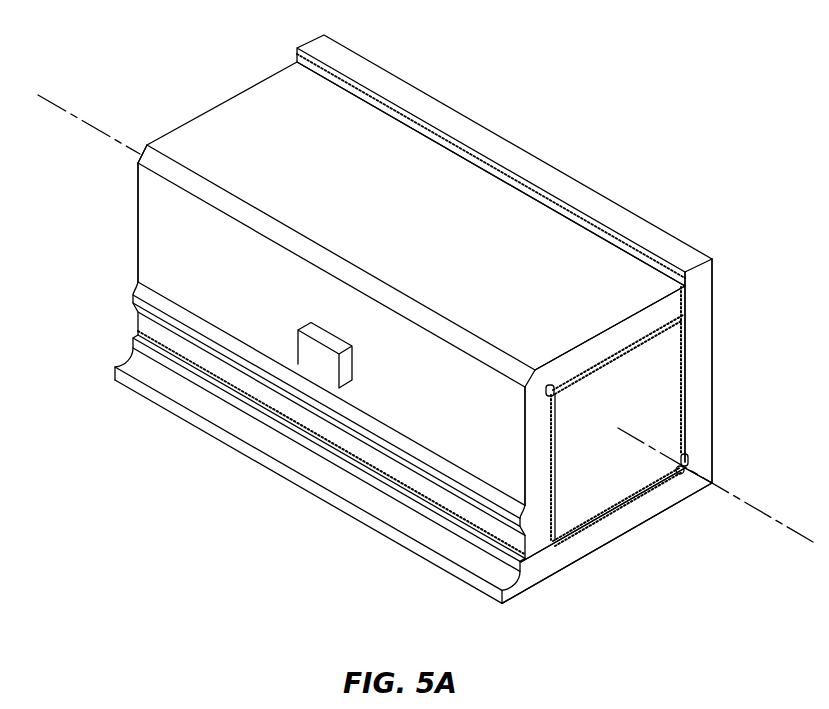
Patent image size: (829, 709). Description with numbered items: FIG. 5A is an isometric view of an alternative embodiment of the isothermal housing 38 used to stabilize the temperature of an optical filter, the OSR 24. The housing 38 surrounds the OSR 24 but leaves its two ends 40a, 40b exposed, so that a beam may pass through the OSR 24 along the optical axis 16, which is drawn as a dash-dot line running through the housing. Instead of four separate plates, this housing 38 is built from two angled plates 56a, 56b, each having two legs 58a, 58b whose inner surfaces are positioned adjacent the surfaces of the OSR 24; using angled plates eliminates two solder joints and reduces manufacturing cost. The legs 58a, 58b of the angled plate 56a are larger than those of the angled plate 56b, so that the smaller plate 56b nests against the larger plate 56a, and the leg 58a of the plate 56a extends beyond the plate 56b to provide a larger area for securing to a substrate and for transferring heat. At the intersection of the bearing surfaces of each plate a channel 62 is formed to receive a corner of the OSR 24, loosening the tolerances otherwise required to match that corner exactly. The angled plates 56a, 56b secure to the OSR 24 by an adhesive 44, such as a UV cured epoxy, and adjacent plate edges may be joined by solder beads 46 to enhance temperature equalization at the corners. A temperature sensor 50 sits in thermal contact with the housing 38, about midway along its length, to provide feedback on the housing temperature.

The optical axis 16 is at (78, 117).
The OSR 24 is at (586, 468).
The isothermal housing 38 is at (552, 126).
The end 40a is at (207, 76).
The end 40b is at (728, 399).
The adhesive 44 is at (583, 530).
The solder beads 46 is at (687, 300).
The temperature sensor 50 is at (317, 358).
The angled plate 56a is at (700, 467).
The angled plate 56b is at (153, 160).
The leg 58a is at (533, 492).
The leg 58b is at (632, 327).
The channel 62 is at (547, 392).